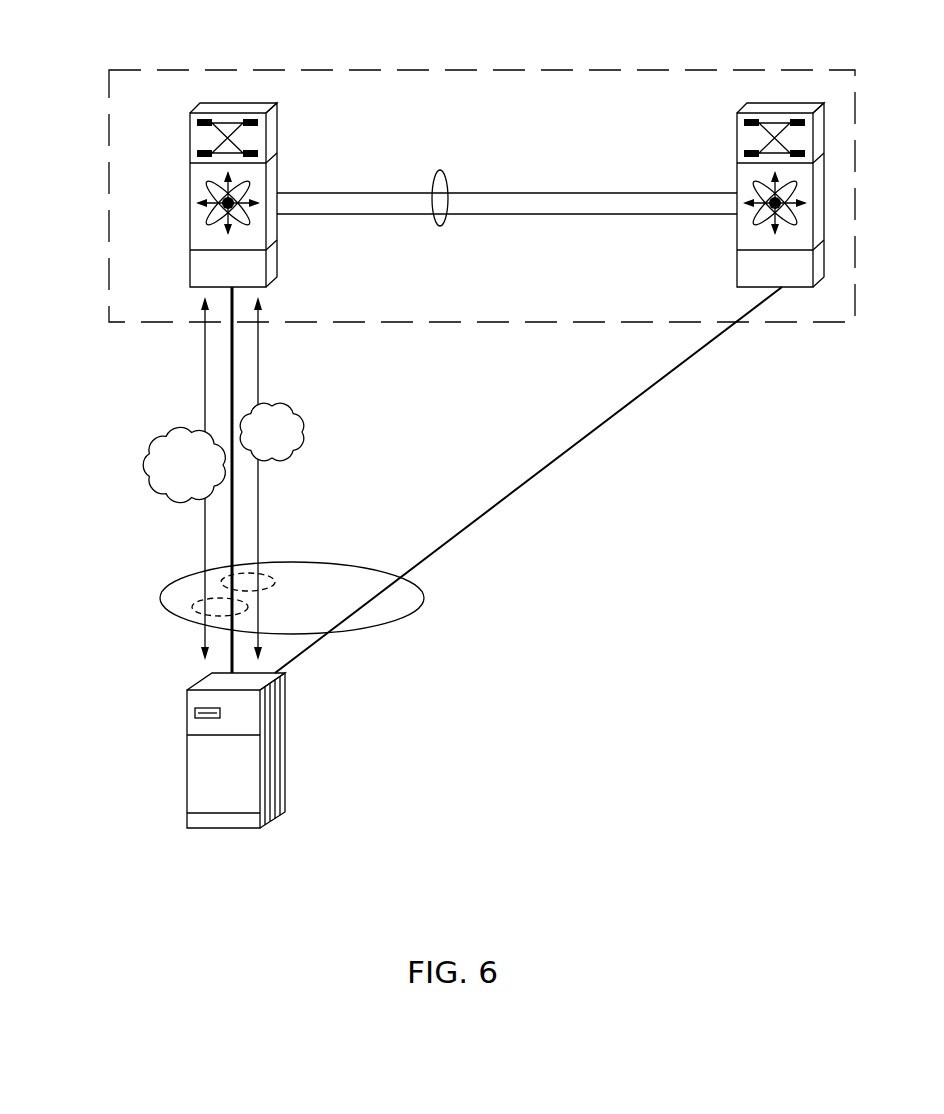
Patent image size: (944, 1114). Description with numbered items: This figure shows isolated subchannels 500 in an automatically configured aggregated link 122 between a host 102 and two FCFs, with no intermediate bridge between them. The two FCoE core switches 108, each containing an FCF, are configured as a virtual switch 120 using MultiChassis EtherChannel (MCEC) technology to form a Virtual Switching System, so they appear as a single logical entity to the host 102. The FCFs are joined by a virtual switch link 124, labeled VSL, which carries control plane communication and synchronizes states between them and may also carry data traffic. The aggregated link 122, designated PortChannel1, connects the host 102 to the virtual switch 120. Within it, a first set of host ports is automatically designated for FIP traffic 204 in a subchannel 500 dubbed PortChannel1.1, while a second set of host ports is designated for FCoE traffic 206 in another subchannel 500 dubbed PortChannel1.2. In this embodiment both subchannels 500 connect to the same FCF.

The host 102 is at (227, 830).
The FCoE core switch 108 is at (190, 197).
The virtual switch 120 is at (548, 68).
The aggregated link 122 is at (358, 562).
The virtual switch link 124 is at (440, 226).
The FIP traffic 204 is at (305, 413).
The FCoE traffic 206 is at (158, 430).
The subchannel 500 is at (223, 578).